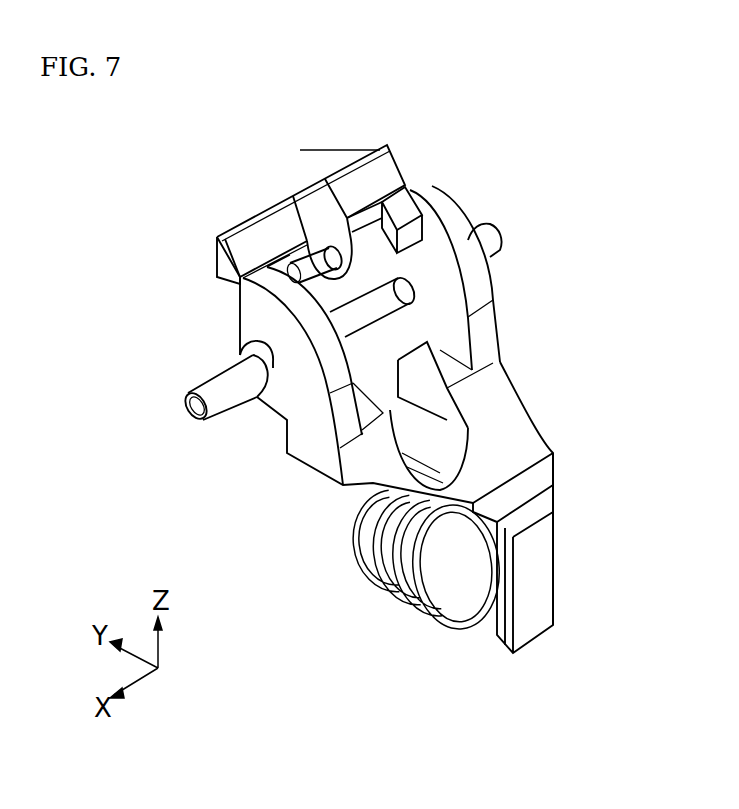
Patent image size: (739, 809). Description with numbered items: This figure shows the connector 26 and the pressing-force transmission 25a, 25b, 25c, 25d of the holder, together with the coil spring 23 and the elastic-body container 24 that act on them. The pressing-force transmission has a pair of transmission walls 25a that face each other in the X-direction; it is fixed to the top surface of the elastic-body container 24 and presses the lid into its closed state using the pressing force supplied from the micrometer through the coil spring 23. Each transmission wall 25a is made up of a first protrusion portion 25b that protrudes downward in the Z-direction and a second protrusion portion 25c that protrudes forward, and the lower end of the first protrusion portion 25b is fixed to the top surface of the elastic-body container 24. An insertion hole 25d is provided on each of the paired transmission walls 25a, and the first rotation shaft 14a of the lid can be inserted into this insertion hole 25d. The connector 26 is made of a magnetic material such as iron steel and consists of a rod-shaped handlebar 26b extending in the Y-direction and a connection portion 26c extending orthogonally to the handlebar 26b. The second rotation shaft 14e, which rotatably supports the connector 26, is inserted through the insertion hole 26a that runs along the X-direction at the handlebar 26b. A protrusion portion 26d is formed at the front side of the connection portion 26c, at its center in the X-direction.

The first rotation shaft 14a is at (192, 407).
The second rotation shaft 14e is at (307, 263).
The coil spring 23 is at (430, 593).
The elastic-body container 24 is at (538, 577).
The transmission walls 25a is at (490, 293).
The first protrusion portion 25b is at (312, 458).
The second protrusion portion 25c is at (443, 208).
The insertion hole 25d is at (412, 281).
The connector 26 is at (381, 167).
The insertion hole 26a is at (307, 243).
The handlebar 26b is at (396, 218).
The connection portion 26c is at (371, 150).
The protrusion portion 26d is at (295, 183).